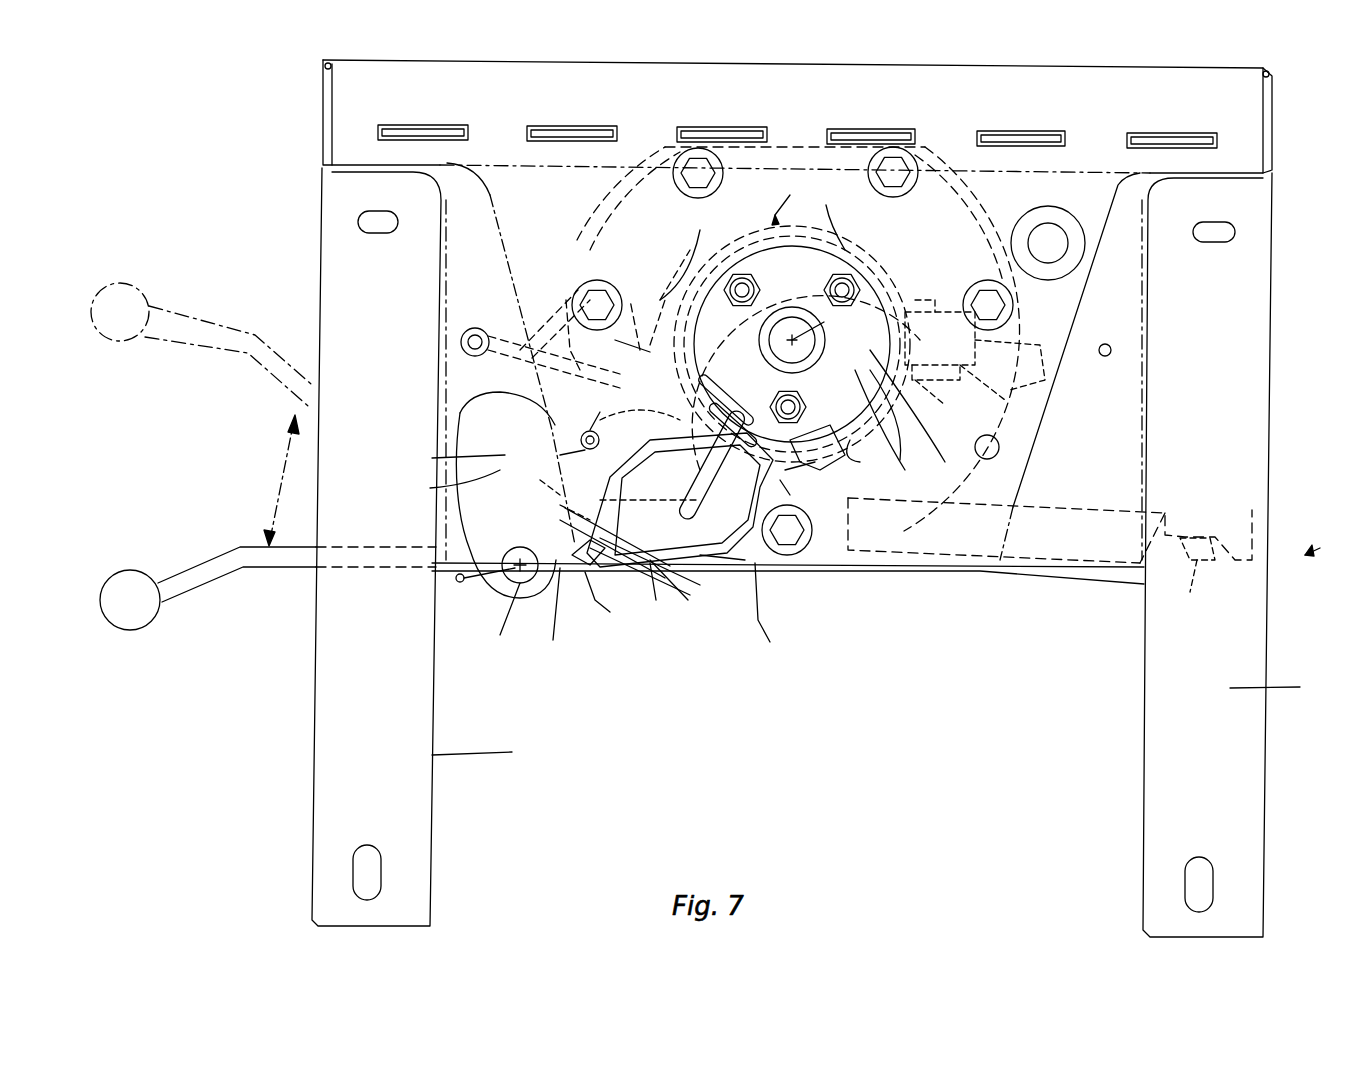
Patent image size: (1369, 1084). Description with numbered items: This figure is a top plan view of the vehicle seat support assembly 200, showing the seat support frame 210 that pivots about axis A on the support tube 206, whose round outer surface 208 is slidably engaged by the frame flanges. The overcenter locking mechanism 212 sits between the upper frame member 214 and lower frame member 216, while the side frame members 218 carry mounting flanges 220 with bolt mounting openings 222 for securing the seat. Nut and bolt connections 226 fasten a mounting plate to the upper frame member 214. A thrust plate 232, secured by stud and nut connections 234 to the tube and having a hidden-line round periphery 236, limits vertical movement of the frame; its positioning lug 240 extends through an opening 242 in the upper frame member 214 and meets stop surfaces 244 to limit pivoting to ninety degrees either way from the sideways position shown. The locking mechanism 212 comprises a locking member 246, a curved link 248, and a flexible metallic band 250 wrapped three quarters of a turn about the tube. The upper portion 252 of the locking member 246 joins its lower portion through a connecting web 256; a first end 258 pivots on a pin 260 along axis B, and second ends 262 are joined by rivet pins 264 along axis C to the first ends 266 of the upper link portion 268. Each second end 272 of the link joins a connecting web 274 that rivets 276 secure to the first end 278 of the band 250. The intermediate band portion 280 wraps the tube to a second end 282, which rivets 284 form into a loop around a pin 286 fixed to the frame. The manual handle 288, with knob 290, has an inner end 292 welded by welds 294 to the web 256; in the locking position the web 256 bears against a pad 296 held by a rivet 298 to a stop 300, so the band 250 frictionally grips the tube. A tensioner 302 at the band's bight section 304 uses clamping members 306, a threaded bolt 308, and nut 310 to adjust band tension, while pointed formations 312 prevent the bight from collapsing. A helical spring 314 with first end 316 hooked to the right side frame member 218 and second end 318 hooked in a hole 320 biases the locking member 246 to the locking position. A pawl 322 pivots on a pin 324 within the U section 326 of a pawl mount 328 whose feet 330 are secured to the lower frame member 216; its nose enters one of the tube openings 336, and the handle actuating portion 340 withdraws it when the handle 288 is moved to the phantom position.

The vehicle seat support assembly 200 is at (1337, 563).
The support tube 206 is at (733, 346).
The round outer surface 208 is at (819, 359).
The seat support frame 210 is at (1272, 388).
The overcenter locking mechanism 212 is at (650, 571).
The upper frame member 214 is at (898, 567).
The lower frame member 216 is at (771, 618).
The side frame members 218 is at (316, 655).
The mounting flanges 220 is at (890, 721).
The bolt mounting openings 222 is at (375, 233).
The nut and bolt connections 226 is at (690, 172).
The thrust plate 232 is at (890, 428).
The stud and nut connections 234 is at (815, 287).
The round periphery 236 is at (880, 250).
The positioning lug 240 is at (740, 406).
The opening 242 is at (833, 215).
The stop surfaces 244 is at (900, 366).
The locking member 246 is at (614, 601).
The curved link 248 is at (439, 486).
The flexible metallic band 250 is at (768, 194).
The upper portion of locking member 252 is at (680, 500).
The connecting web 256 is at (582, 565).
The first end of locking member portion 258 is at (641, 395).
The pin 260 is at (506, 495).
The second ends of locking member portions 262 is at (576, 610).
The rivet pins 264 is at (509, 605).
The first ends of link portions 266 is at (477, 593).
The upper link portion 268 is at (444, 458).
The second end of link portion 272 is at (643, 304).
The connecting web of link 274 is at (660, 330).
The rivets 276 is at (712, 352).
The first end of band 278 is at (778, 337).
The intermediate band portion 280 is at (856, 463).
The second end of band 282 is at (560, 380).
The rivets 284 is at (555, 320).
The pin 286 is at (474, 328).
The manual handle 288 is at (262, 480).
The knob 290 is at (126, 283).
The inner end of handle 292 is at (544, 453).
The welds 294 is at (650, 498).
The pad 296 is at (636, 543).
The rivet 298 is at (685, 594).
The stop 300 is at (705, 580).
The tensioner 302 is at (1045, 378).
The bight section 304 is at (1006, 393).
The clamping members 306 is at (905, 343).
The threaded bolt 308 is at (949, 403).
The nut 310 is at (1024, 243).
The pointed formations 312 is at (1040, 328).
The helical spring 314 is at (1035, 500).
The first end of spring 316 is at (1205, 580).
The second end of spring 318 is at (549, 520).
The hole 320 is at (524, 487).
The pawl 322 is at (798, 495).
The pin 324 is at (722, 468).
The U section 326 is at (730, 549).
The pawl mount 328 is at (819, 438).
The feet 330 is at (628, 417).
The openings in support tube 336 is at (759, 344).
The handle actuating portion 340 is at (801, 471).